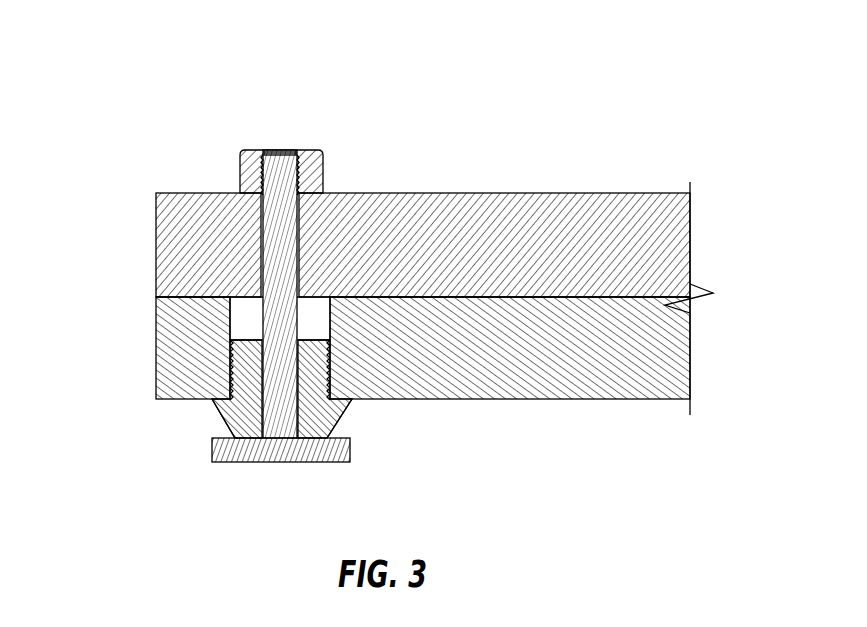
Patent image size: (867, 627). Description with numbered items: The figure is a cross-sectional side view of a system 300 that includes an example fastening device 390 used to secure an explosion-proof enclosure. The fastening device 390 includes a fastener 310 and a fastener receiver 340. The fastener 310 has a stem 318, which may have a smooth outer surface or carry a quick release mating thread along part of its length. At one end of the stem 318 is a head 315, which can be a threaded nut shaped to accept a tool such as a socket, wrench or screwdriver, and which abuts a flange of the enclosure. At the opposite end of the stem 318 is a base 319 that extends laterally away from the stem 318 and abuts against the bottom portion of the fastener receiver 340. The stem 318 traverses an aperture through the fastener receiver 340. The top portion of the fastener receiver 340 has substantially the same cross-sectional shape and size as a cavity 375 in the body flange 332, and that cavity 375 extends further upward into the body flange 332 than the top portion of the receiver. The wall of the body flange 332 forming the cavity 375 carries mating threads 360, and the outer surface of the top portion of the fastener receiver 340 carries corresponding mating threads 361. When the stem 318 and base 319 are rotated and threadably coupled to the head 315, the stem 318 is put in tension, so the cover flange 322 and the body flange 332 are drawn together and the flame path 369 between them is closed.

The system 300 is at (150, 91).
The fastener 310 is at (253, 334).
The head 315 is at (310, 150).
The stem 318 is at (268, 253).
The base 319 is at (330, 462).
The cover flange 322 is at (530, 193).
The body flange 332 is at (502, 401).
The fastener receiver 340 is at (343, 413).
The mating threads 360 is at (262, 387).
The mating threads 361 is at (234, 367).
The flame path 369 is at (177, 298).
The cavity 375 is at (240, 310).
The fastening device 390 is at (303, 109).